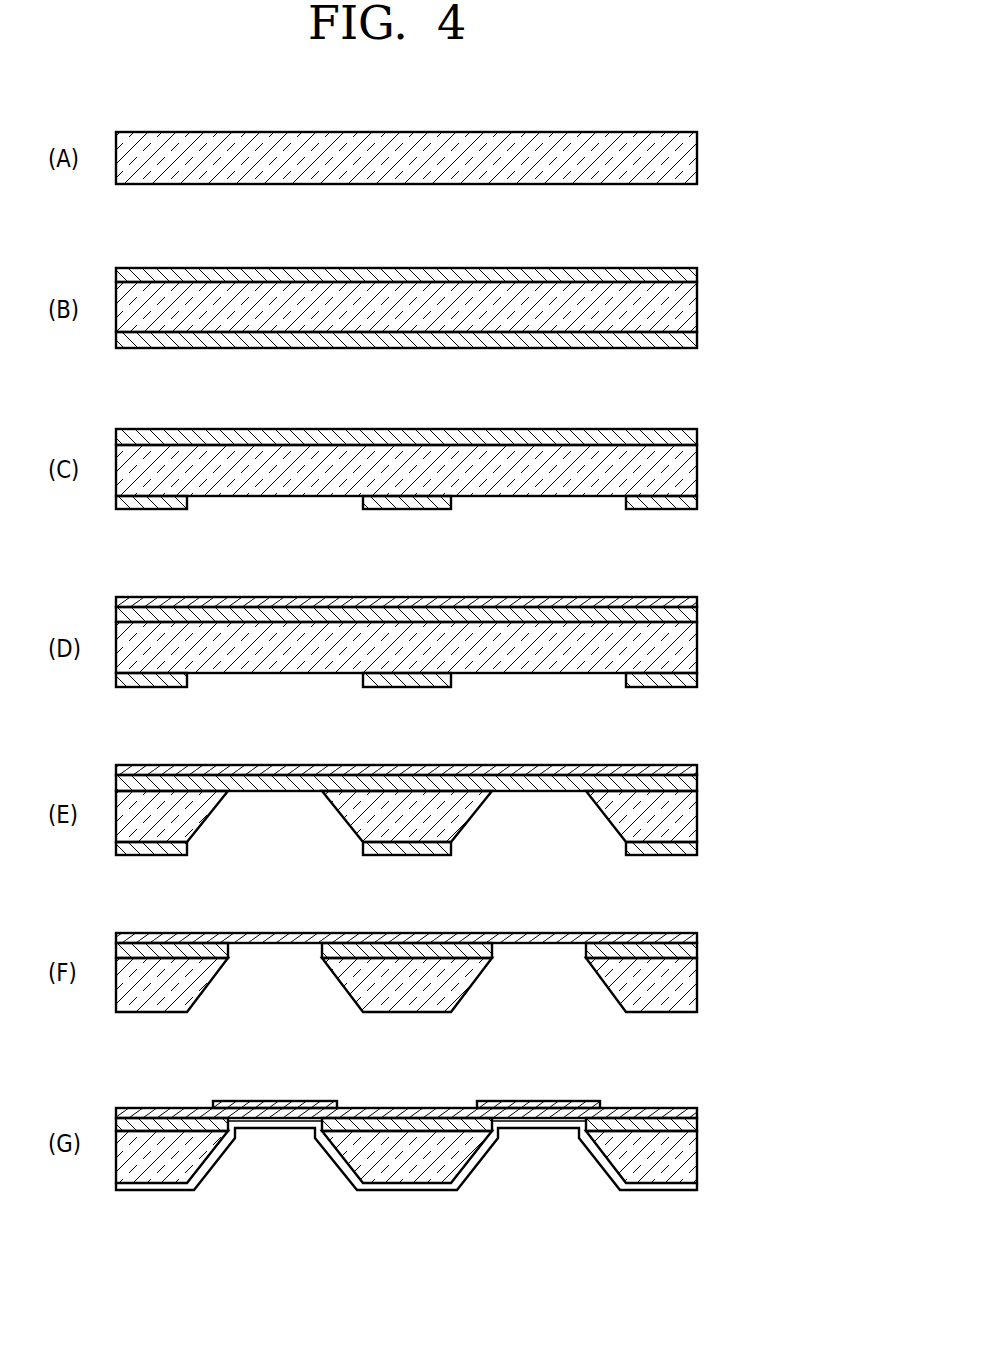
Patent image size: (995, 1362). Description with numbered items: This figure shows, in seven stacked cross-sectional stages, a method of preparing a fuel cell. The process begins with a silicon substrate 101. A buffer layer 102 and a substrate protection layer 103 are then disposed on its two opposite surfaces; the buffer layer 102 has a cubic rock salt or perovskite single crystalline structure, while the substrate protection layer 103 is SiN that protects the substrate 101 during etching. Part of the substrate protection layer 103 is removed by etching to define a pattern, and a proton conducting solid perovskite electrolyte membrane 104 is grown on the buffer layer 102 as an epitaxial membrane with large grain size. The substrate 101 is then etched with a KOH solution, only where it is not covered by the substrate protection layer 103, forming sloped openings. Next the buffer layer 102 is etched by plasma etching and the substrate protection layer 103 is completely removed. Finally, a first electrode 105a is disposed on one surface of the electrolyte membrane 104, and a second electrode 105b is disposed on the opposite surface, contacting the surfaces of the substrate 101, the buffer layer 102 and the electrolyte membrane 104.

The substrate 101 is at (716, 1163).
The buffer layer 102 is at (716, 1130).
The substrate protection layer 103 is at (716, 848).
The electrolyte membrane 104 is at (716, 1106).
The first electrode 105a is at (537, 1099).
The second electrode 105b is at (660, 1193).